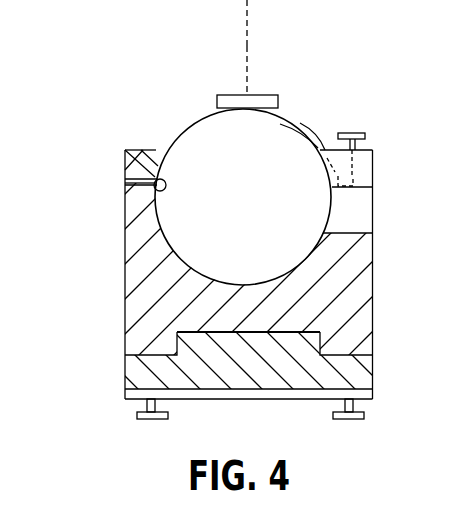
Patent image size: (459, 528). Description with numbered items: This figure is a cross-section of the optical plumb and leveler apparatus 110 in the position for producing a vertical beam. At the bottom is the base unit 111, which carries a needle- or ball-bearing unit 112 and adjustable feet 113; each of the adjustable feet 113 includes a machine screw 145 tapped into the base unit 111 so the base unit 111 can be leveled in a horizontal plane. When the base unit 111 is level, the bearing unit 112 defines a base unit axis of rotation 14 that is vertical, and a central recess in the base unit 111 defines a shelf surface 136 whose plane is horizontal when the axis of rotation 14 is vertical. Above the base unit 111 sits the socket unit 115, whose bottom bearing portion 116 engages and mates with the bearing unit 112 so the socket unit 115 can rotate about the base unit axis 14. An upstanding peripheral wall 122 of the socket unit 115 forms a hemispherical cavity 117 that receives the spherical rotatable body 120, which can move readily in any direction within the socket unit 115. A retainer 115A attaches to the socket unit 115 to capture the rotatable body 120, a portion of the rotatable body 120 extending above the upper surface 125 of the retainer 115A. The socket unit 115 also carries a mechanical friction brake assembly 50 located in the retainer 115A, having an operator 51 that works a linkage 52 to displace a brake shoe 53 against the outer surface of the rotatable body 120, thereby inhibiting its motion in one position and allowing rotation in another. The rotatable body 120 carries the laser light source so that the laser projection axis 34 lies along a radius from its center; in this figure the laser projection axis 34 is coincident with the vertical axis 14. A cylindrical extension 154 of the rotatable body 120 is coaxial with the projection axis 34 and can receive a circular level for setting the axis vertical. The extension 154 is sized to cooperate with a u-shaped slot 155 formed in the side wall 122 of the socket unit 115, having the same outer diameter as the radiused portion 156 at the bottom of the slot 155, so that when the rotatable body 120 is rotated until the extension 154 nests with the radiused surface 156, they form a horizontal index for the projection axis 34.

The optical plumb and leveler apparatus 110 is at (357, 78).
The laser projection axis 34 is at (247, 30).
The base unit axis of rotation 14 is at (248, 64).
The cylindrical extension 154 is at (279, 96).
The rotatable body 120 is at (195, 138).
The brake shoe 53 is at (280, 122).
The mechanical friction brake assembly 50 is at (328, 150).
The operator 51 is at (353, 132).
The linkage 52 is at (355, 163).
The u-shaped slot 155 is at (357, 196).
The radiused portion 156 is at (358, 233).
The socket unit 115 is at (358, 292).
The retainer 115A is at (123, 150).
The upper surface 125 is at (154, 151).
The hemispherical cavity 117 is at (127, 174).
The upstanding peripheral wall 122 is at (126, 229).
The shelf surface 136 is at (192, 332).
The bearing unit 112 is at (182, 350).
The bottom bearing portion 116 is at (365, 348).
The base unit 111 is at (368, 372).
The machine screw 145 is at (147, 406).
The adjustable feet 113 is at (148, 419).